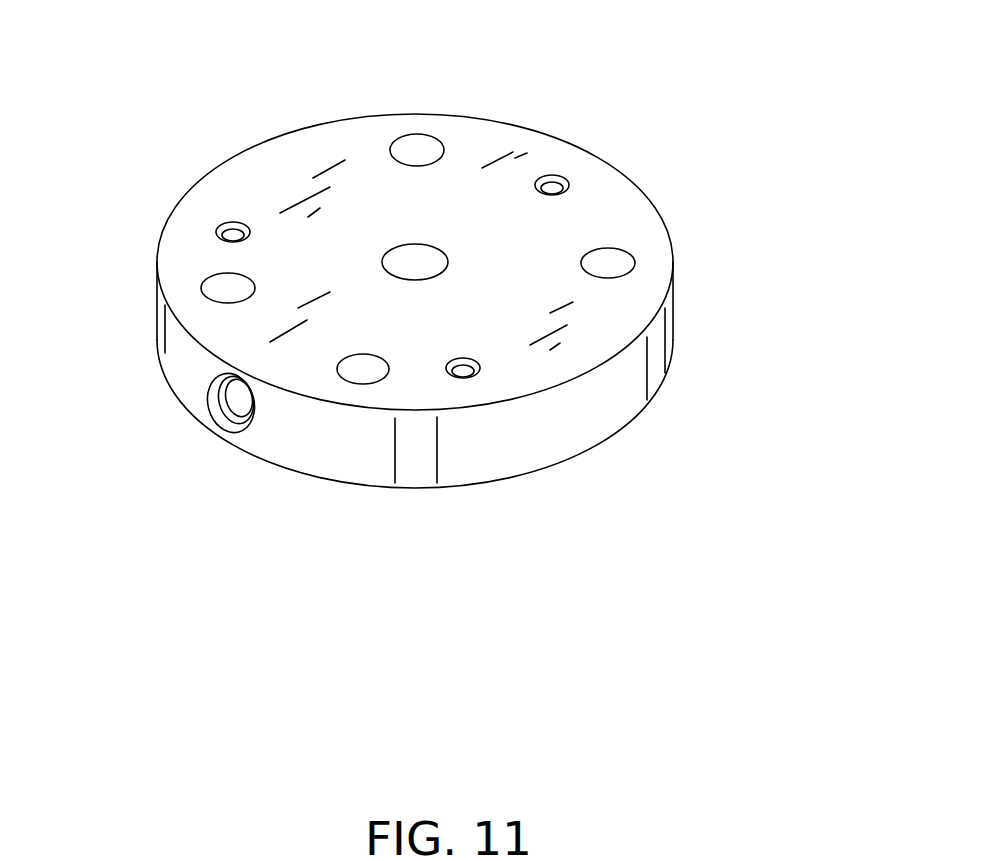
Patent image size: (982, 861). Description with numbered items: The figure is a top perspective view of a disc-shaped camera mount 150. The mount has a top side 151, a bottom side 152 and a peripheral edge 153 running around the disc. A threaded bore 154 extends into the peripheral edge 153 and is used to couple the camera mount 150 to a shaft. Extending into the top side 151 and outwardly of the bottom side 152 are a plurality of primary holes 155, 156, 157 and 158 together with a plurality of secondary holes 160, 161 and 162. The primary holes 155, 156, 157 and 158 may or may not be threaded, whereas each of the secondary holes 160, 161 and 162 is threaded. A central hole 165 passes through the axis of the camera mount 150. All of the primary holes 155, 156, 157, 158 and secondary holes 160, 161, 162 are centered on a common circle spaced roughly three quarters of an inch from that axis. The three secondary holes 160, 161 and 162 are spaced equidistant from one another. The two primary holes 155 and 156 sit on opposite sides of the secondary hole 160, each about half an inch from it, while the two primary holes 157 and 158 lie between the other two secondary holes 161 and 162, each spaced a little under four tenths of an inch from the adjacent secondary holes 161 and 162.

The camera mount 150 is at (510, 293).
The top side 151 is at (612, 197).
The bottom side 152 is at (600, 447).
The peripheral edge 153 is at (668, 374).
The threaded bore 154 is at (233, 432).
The primary hole 155 is at (427, 135).
The primary hole 156 is at (635, 257).
The primary hole 157 is at (363, 384).
The primary hole 158 is at (200, 284).
The secondary hole 160 is at (560, 175).
The secondary hole 161 is at (480, 379).
The secondary hole 162 is at (220, 223).
The central hole 165 is at (403, 244).